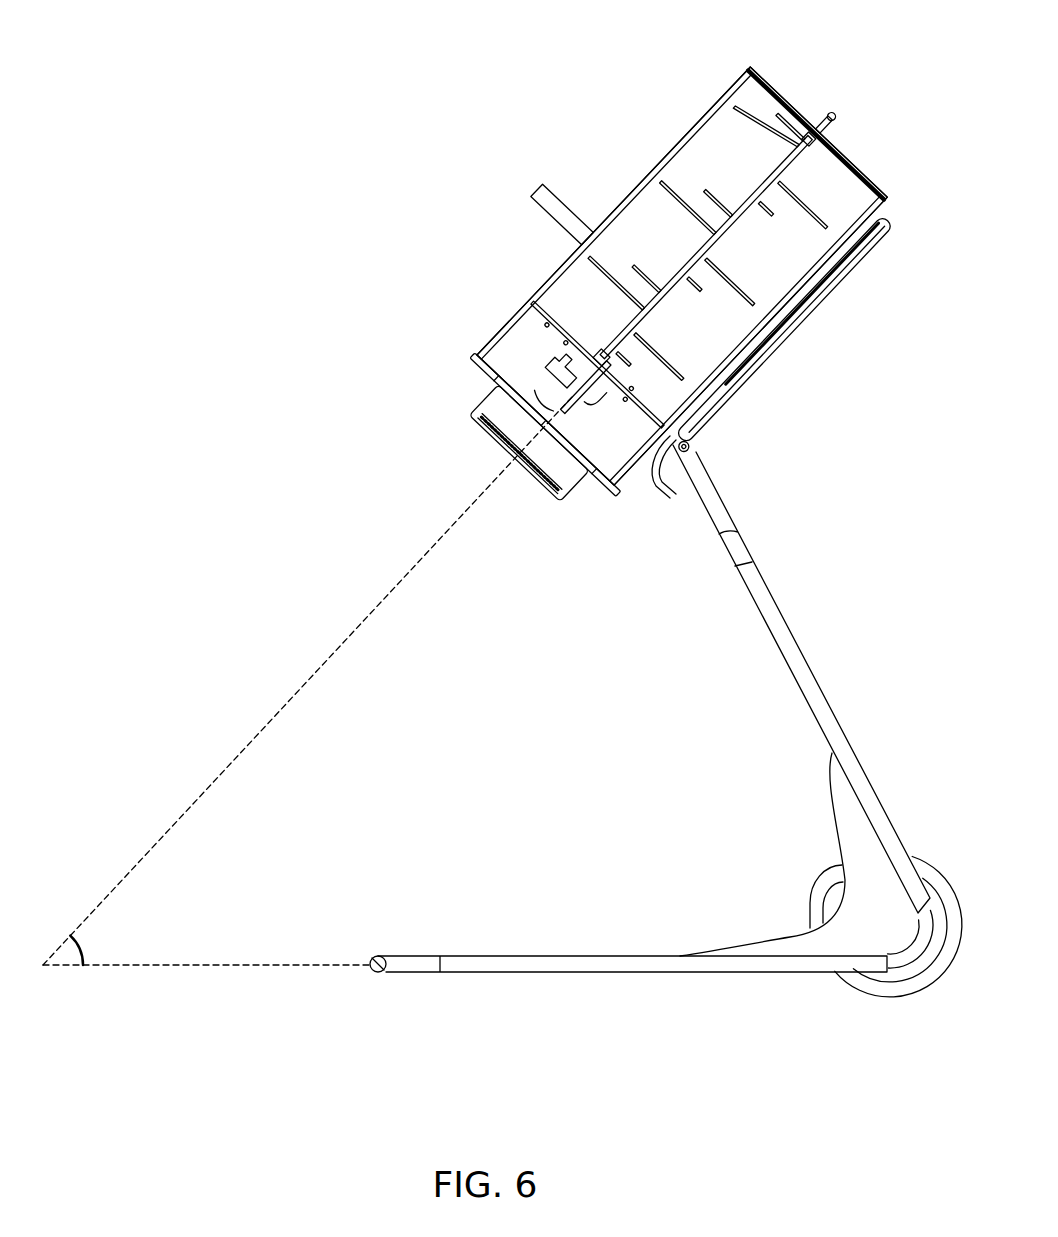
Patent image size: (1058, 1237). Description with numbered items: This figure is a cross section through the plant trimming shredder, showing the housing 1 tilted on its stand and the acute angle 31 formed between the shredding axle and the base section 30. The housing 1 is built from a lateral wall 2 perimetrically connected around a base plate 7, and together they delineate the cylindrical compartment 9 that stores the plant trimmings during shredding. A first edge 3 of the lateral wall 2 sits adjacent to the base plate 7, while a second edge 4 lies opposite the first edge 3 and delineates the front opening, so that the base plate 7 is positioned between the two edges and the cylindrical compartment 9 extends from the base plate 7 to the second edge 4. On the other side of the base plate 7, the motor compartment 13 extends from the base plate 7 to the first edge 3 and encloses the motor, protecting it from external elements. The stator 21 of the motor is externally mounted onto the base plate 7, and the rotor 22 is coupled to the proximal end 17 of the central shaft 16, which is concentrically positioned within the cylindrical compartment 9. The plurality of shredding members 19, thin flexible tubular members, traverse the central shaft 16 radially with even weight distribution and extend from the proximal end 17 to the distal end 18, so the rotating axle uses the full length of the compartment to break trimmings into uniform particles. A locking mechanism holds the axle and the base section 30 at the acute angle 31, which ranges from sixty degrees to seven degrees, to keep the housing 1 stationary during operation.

The housing 1 is at (724, 76).
The lateral wall 2 is at (600, 215).
The first edge 3 is at (483, 352).
The second edge 4 is at (893, 195).
The base plate 7 is at (655, 427).
The cylindrical compartment 9 is at (703, 158).
The motor compartment 13 is at (617, 470).
The central shaft 16 is at (740, 223).
The proximal end 17 is at (600, 352).
The distal end 18 is at (813, 147).
The plurality of shredding members 19 is at (667, 185).
The stator 21 is at (553, 378).
The rotor 22 is at (587, 398).
The base section 30 is at (568, 956).
The acute angle 31 is at (85, 955).